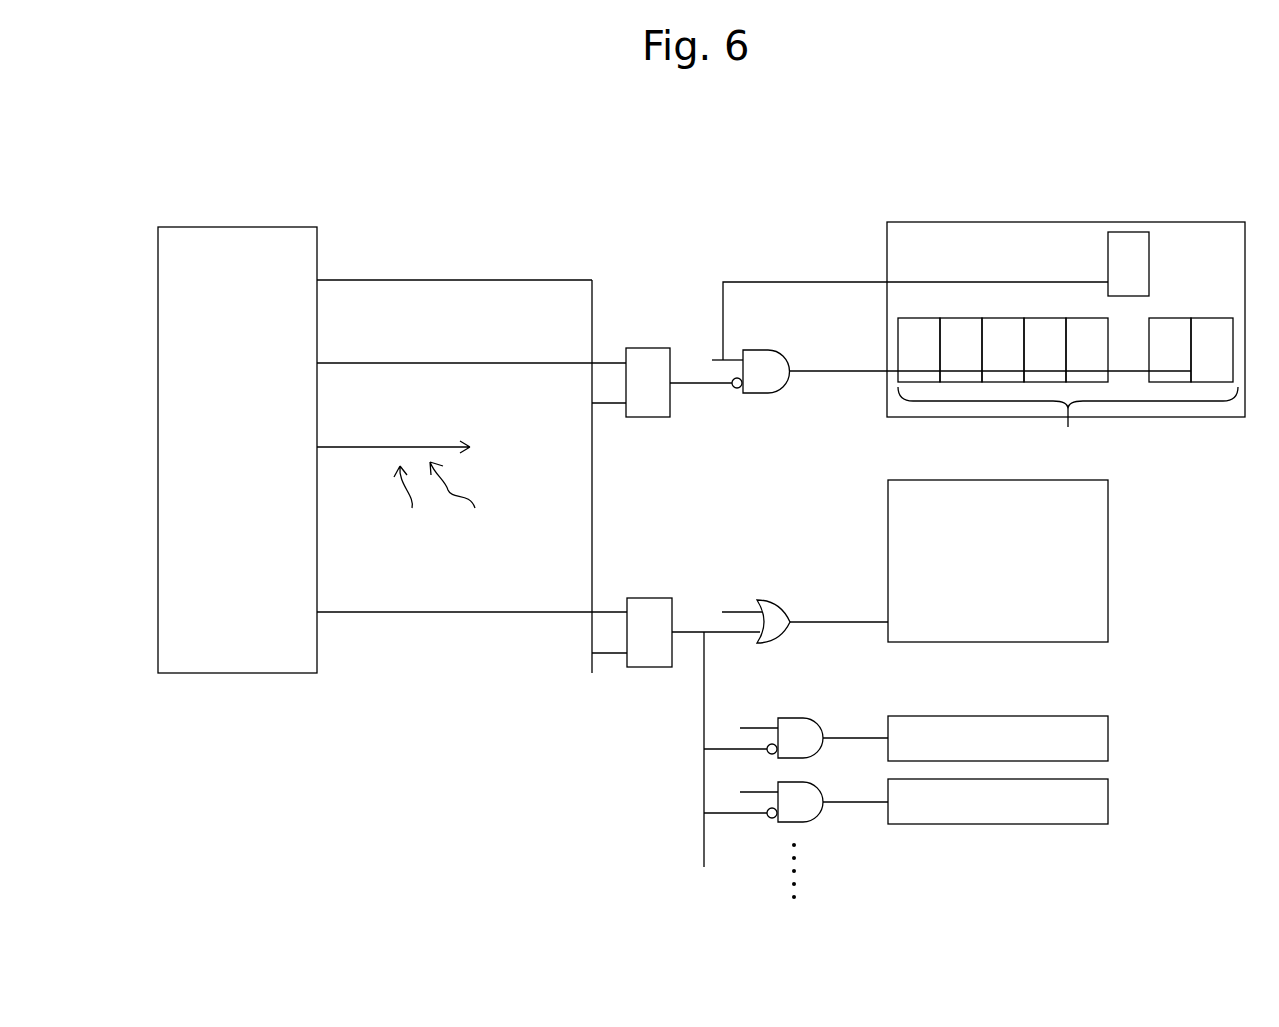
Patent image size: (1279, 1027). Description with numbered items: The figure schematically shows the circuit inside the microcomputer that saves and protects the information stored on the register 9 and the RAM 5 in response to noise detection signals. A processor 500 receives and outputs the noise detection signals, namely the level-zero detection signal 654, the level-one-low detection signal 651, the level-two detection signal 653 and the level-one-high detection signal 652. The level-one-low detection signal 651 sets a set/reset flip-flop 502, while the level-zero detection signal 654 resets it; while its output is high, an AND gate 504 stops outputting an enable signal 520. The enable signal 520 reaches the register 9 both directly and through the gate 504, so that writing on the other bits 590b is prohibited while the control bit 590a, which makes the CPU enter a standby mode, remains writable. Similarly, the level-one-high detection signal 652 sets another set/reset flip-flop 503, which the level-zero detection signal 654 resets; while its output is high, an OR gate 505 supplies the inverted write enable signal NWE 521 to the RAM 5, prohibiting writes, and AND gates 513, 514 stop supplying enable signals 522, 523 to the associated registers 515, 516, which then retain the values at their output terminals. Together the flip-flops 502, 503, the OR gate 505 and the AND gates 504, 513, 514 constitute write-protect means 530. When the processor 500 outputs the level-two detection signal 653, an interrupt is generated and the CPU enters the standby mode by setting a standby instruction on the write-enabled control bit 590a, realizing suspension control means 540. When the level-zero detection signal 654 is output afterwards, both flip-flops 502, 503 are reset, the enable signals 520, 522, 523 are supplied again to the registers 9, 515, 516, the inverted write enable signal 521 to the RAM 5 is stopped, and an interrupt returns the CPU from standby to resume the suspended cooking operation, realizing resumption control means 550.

The processor 500 is at (272, 217).
The Level 0 detection signal 654 is at (388, 280).
The Level 1(L) detection signal 651 is at (388, 363).
The Level 2 detection signal 653 is at (388, 447).
The Level 1(H) detection signal 652 is at (388, 612).
The resumption control means 550 is at (412, 504).
The suspension control means 540 is at (471, 502).
The write-protect means 530 is at (677, 241).
The set/reset flip-flop 502 is at (652, 348).
The set/reset flip-flop 503 is at (652, 598).
The AND gate 504 is at (778, 350).
The OR gate 505 is at (780, 603).
The enable signal 520 is at (752, 282).
The inverted write enable signal NWE 521 is at (736, 612).
The enable signal 522 is at (750, 727).
The enable signal 523 is at (752, 793).
The AND gate 513 is at (808, 718).
The AND gate 514 is at (806, 823).
The register 515 is at (1108, 737).
The register 516 is at (1108, 800).
The register 9 is at (1217, 216).
The control bit 590a is at (1127, 232).
The other bits 590b is at (1068, 393).
The RAM 5 is at (1121, 514).